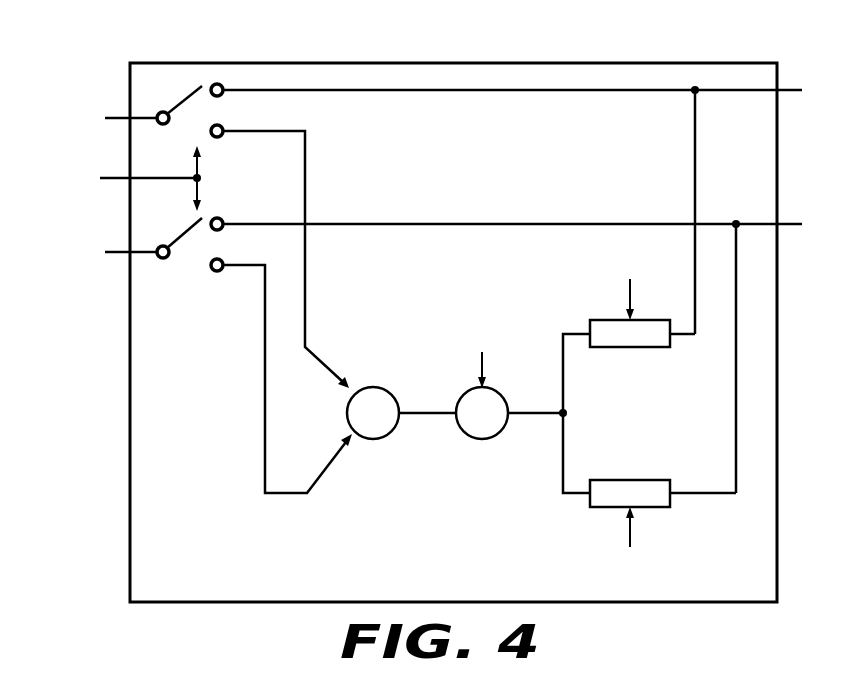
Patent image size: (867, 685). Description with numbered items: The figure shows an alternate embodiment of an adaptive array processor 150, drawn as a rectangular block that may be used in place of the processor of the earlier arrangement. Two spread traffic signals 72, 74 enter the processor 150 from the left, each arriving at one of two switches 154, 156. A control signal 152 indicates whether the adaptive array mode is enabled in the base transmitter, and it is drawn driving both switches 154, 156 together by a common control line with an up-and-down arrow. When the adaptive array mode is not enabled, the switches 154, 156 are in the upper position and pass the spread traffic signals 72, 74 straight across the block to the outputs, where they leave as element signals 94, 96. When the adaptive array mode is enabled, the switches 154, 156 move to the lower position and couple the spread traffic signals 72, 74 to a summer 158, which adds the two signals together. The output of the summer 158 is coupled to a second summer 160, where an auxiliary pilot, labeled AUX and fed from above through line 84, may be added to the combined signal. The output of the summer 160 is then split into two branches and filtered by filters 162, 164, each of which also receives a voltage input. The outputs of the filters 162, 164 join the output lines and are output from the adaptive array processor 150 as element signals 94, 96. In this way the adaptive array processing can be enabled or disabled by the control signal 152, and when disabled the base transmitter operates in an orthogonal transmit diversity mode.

The adaptive array processor 150 is at (155, 62).
The switch 154 is at (177, 100).
The switch 156 is at (185, 230).
The spread traffic signal 72 is at (117, 120).
The spread traffic signal 74 is at (117, 255).
The control signal 152 is at (122, 180).
The element signal 94 is at (787, 91).
The element signal 96 is at (788, 223).
The summer 158 is at (372, 386).
The summer 160 is at (482, 440).
The auxiliary input 84 is at (482, 307).
The filter 162 is at (605, 320).
The filter 164 is at (640, 480).